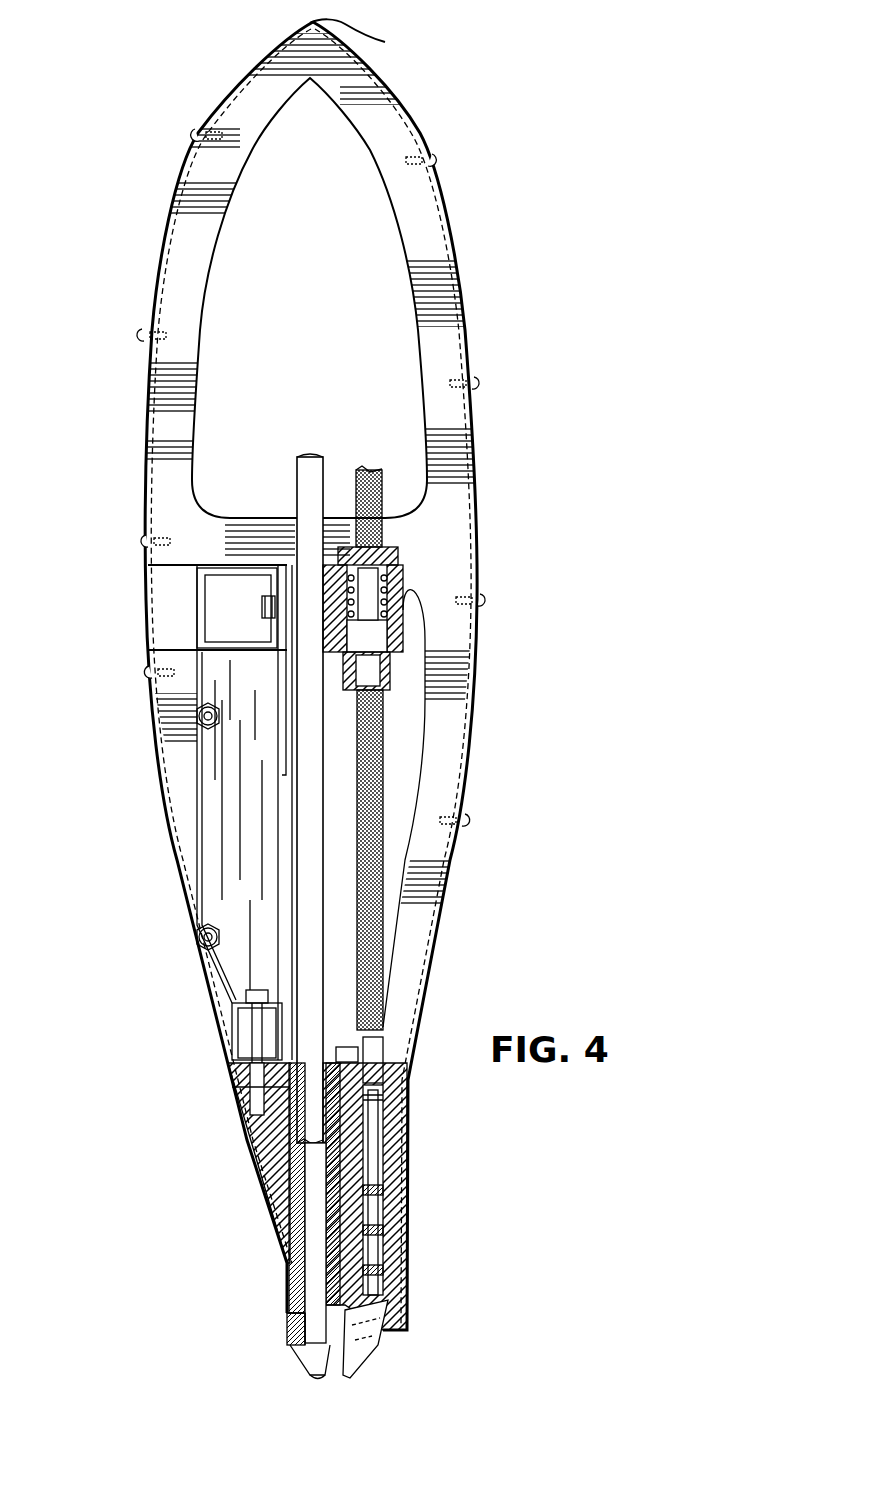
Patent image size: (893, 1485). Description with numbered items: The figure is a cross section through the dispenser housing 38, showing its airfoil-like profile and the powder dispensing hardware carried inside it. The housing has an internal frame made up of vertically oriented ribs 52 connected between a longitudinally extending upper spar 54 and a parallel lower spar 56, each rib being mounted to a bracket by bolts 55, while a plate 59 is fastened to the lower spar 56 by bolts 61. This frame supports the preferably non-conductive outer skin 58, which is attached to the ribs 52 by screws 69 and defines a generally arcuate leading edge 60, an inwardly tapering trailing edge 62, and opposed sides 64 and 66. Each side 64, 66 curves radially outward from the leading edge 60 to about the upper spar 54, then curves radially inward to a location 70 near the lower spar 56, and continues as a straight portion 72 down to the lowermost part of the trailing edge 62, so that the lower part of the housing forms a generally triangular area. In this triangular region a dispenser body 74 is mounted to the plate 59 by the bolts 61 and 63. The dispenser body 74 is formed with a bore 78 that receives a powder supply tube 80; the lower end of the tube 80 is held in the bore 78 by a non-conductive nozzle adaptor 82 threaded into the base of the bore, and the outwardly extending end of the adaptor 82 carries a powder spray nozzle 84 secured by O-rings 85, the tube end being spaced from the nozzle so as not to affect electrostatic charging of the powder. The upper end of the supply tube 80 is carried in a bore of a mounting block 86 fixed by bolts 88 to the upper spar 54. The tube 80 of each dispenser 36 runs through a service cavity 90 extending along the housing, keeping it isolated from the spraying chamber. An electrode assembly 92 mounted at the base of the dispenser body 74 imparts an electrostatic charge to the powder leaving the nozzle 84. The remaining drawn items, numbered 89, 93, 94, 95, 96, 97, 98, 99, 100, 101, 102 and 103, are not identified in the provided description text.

The dispenser 36 is at (266, 1331).
The dispenser housing 38 is at (505, 250).
The ribs 52 is at (452, 432).
The upper spar 54 is at (200, 605).
The bolts 55 is at (216, 930).
The lower spar 56 is at (232, 1040).
The outer skin 58 is at (466, 303).
The plate 59 is at (240, 1083).
The leading edge 60 is at (362, 37).
The bolts 61 is at (262, 1032).
The trailing edge 62 is at (278, 1280).
The bolts 63 is at (355, 1040).
The side 64 is at (148, 651).
The side 66 is at (480, 572).
The screws 69 is at (198, 128).
The location 70 is at (235, 1063).
The straight portion 72 is at (265, 1196).
The dispenser body 74 is at (280, 1142).
The bore 78 is at (250, 1130).
The powder supply tube 80 is at (312, 460).
The nozzle adaptor 82 is at (290, 1240).
The powder spray nozzle 84 is at (290, 1343).
The O-rings 85 is at (292, 1322).
The mounting block 86 is at (410, 640).
The bolts 88 is at (262, 609).
The nozzle tip 89 is at (315, 1372).
The service cavity 90 is at (300, 288).
The electrode assembly 92 is at (385, 1345).
The spring assembly 93 is at (410, 580).
The nut 94 is at (385, 1050).
The threaded rod 95 is at (380, 470).
The nut 96 is at (392, 556).
The retainer 97 is at (410, 690).
The stem 98 is at (362, 700).
The seal 99 is at (395, 1178).
The seal 100 is at (395, 1235).
The pin 101 is at (385, 1104).
The pin sleeve 102 is at (385, 1131).
The seal rings 103 is at (395, 1215).